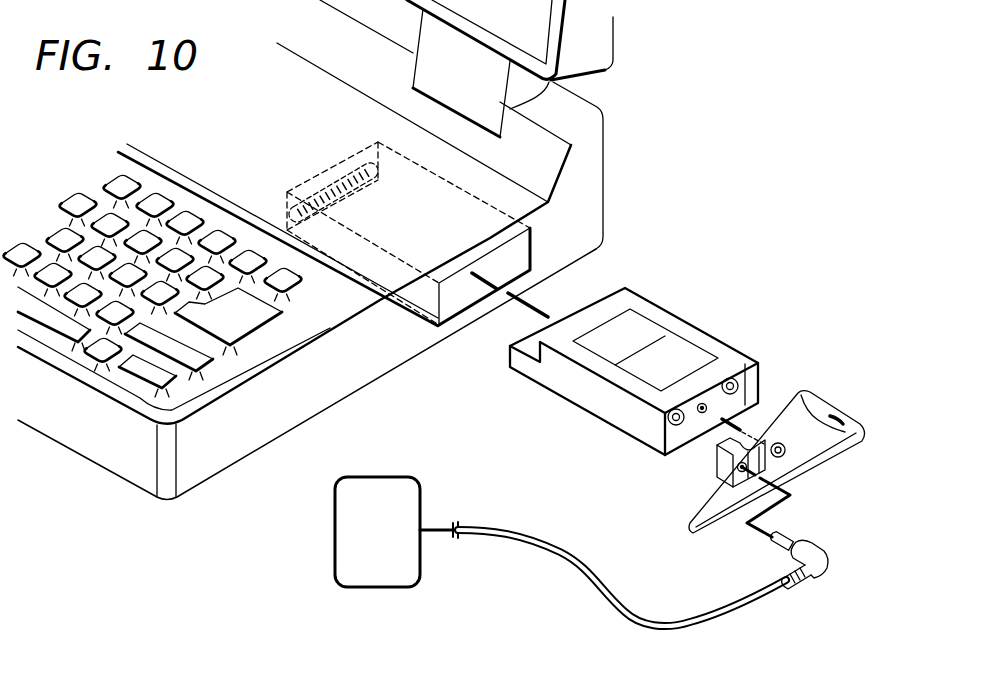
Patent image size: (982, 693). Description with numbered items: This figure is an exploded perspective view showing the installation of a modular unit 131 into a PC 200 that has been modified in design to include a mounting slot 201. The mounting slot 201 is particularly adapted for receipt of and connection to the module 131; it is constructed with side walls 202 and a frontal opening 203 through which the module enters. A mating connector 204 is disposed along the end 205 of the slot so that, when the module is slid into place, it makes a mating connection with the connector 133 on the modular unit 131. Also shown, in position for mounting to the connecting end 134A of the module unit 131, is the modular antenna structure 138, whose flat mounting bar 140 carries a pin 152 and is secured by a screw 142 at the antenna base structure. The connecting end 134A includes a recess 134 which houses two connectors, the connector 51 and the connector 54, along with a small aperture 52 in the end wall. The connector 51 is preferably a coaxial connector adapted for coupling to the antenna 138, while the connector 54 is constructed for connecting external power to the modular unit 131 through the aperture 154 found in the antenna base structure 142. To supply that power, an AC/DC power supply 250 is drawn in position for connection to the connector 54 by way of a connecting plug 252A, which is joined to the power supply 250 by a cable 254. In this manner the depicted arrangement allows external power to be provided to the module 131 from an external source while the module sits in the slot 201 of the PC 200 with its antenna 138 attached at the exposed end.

The PC 200 is at (597, 174).
The mounting slot 201 is at (518, 247).
The side walls 202 is at (470, 200).
The frontal opening 203 is at (453, 297).
The mating connector 204 is at (355, 208).
The end 205 is at (368, 160).
The modular unit 131 is at (646, 359).
The connector 133 is at (600, 297).
The recess 134 is at (763, 360).
The connecting end 134A is at (655, 430).
The connector 51 is at (735, 372).
The aperture 52 is at (703, 393).
The connector 54 is at (658, 425).
The modular antenna structure 138 is at (779, 448).
The mounting bar 140 is at (712, 522).
The antenna base structure 142 is at (798, 400).
The pin 152 is at (796, 470).
The aperture 154 is at (716, 462).
The AC/DC power supply 250 is at (421, 502).
The connecting plug 252A is at (820, 573).
The cable 254 is at (577, 562).